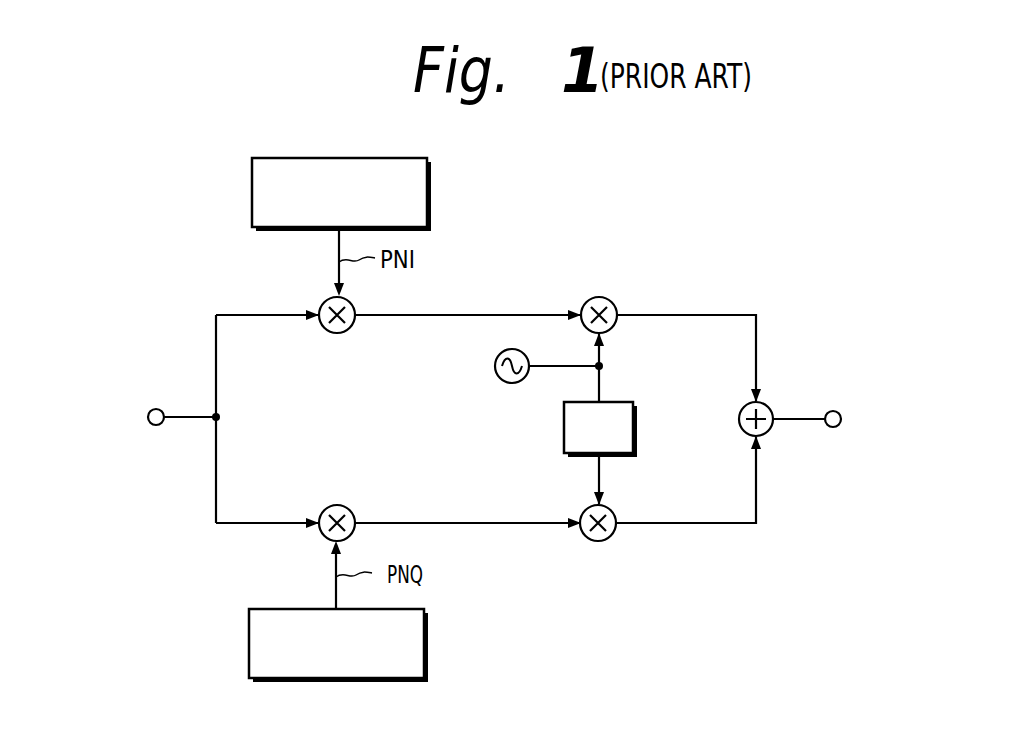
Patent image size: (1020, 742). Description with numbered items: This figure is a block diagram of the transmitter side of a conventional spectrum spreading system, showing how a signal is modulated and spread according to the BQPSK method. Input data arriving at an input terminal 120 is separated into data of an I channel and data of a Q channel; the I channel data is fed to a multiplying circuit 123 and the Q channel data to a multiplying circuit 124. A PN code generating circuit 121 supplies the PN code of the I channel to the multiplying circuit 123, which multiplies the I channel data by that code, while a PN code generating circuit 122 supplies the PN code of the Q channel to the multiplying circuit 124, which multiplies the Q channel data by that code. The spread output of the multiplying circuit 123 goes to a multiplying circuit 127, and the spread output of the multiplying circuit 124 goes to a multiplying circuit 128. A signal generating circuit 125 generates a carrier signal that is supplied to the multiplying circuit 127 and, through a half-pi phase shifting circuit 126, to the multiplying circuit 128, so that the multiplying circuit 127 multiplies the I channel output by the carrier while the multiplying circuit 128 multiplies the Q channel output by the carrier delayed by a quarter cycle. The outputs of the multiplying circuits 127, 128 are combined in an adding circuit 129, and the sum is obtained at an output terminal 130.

The input terminal 120 is at (148, 417).
The PN code generating circuit 121 is at (252, 190).
The PN code generating circuit 122 is at (250, 641).
The multiplying circuit 123 is at (337, 334).
The multiplying circuit 124 is at (337, 504).
The signal generating circuit 125 is at (495, 365).
The pi/2 phase shifting circuit 126 is at (564, 426).
The multiplying circuit 127 is at (599, 297).
The multiplying circuit 128 is at (598, 541).
The adding circuit 129 is at (739, 417).
The output terminal 130 is at (842, 422).